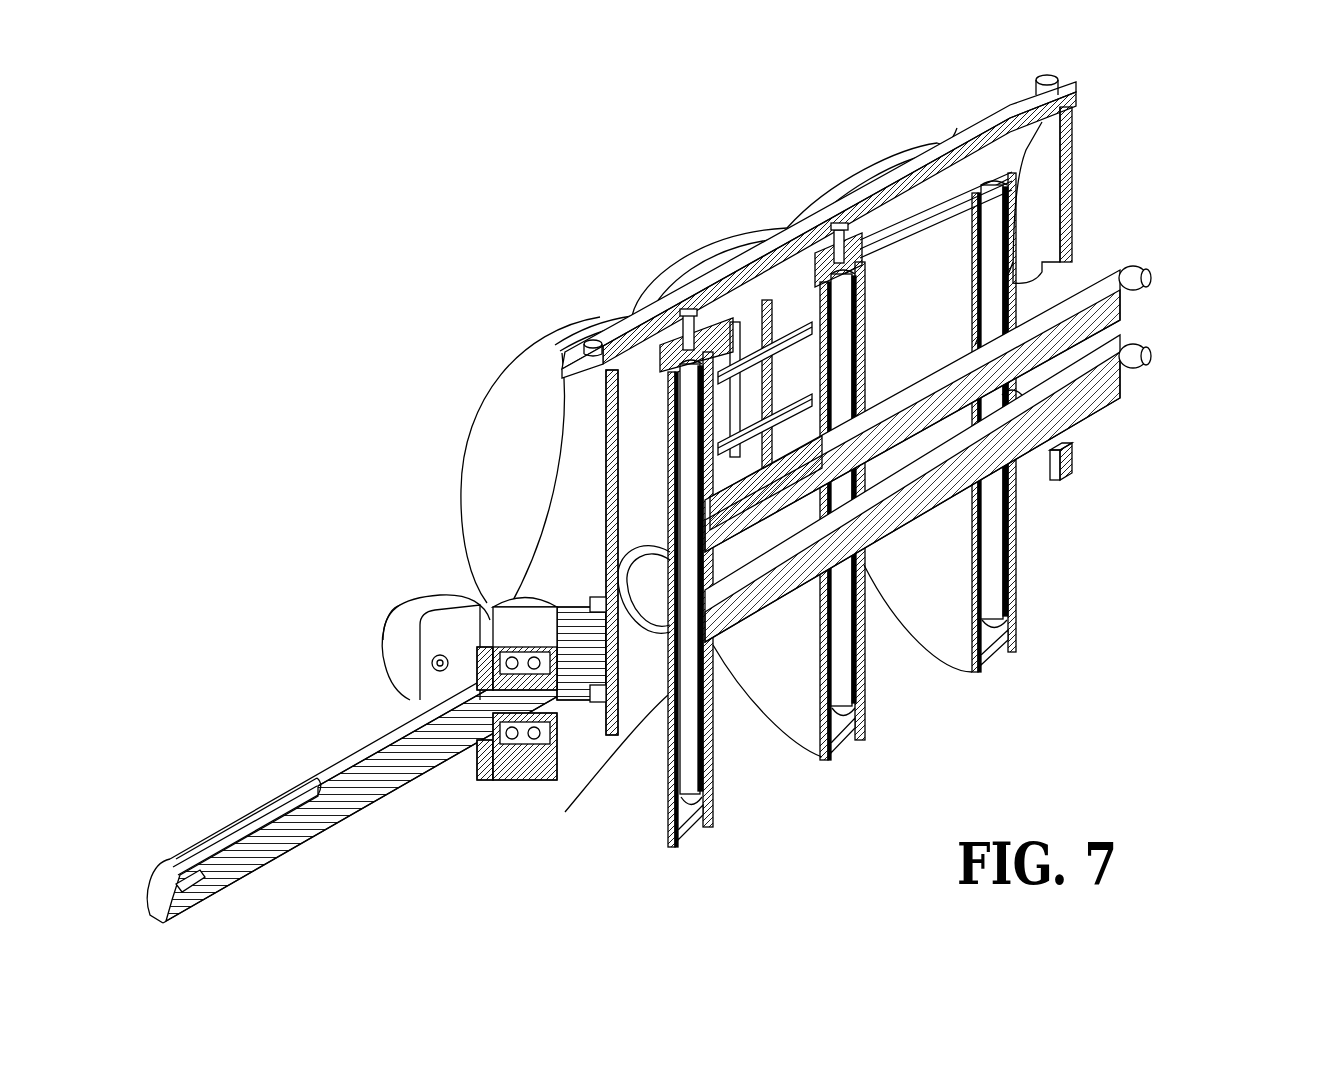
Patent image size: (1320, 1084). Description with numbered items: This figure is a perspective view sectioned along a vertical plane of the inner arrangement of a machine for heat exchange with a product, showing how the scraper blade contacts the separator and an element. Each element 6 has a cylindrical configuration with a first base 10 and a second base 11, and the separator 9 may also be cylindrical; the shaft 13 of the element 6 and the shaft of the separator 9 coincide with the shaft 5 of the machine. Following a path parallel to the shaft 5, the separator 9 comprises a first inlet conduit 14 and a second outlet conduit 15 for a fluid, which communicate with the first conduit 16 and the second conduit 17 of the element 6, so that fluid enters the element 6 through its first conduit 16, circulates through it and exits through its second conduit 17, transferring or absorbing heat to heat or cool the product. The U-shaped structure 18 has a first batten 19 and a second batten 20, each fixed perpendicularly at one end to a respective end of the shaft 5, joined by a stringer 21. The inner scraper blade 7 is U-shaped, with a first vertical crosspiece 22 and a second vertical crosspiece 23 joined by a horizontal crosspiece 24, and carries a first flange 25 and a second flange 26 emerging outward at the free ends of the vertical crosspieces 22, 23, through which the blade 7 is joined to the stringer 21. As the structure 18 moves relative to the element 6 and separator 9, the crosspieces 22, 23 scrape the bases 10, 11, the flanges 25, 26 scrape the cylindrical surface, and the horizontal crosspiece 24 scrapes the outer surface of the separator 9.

The shaft 5 is at (260, 790).
The element 6 is at (683, 837).
The inner scraper blade 7 is at (750, 305).
The separator 9 is at (727, 632).
The first base 10 is at (632, 793).
The second base 11 is at (708, 807).
The shaft of the element 13 is at (617, 695).
The first inlet conduit 14 is at (1100, 340).
The second outlet conduit 15 is at (1090, 387).
The first conduit 16 is at (688, 437).
The second conduit 17 is at (690, 763).
The structure 18 is at (1073, 165).
The first batten 19 is at (560, 557).
The second batten 20 is at (1035, 155).
The stringer 21 is at (909, 172).
The first vertical crosspiece 22 is at (595, 338).
The second vertical crosspiece 23 is at (793, 298).
The horizontal crosspiece 24 is at (727, 503).
The first flange 25 is at (700, 352).
The second flange 26 is at (827, 225).